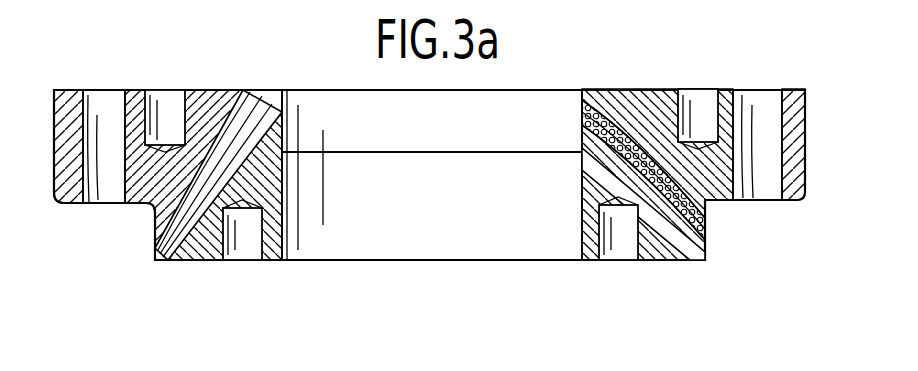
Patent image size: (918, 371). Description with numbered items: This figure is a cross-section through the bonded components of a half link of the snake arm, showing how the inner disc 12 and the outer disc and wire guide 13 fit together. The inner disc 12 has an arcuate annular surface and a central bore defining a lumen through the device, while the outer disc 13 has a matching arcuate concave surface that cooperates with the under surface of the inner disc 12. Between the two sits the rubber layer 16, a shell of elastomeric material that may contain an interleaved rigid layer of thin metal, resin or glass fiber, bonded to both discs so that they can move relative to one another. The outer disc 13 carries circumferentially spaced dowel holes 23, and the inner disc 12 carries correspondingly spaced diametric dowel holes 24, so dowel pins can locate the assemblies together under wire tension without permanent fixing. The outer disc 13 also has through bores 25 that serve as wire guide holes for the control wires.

The inner disc 12 is at (180, 258).
The outer disc and wire guide 13 is at (627, 88).
The rubber layer 16 is at (707, 230).
The dowel holes 23 is at (172, 105).
The dowel holes 24 is at (243, 248).
The through bores 25 is at (760, 105).